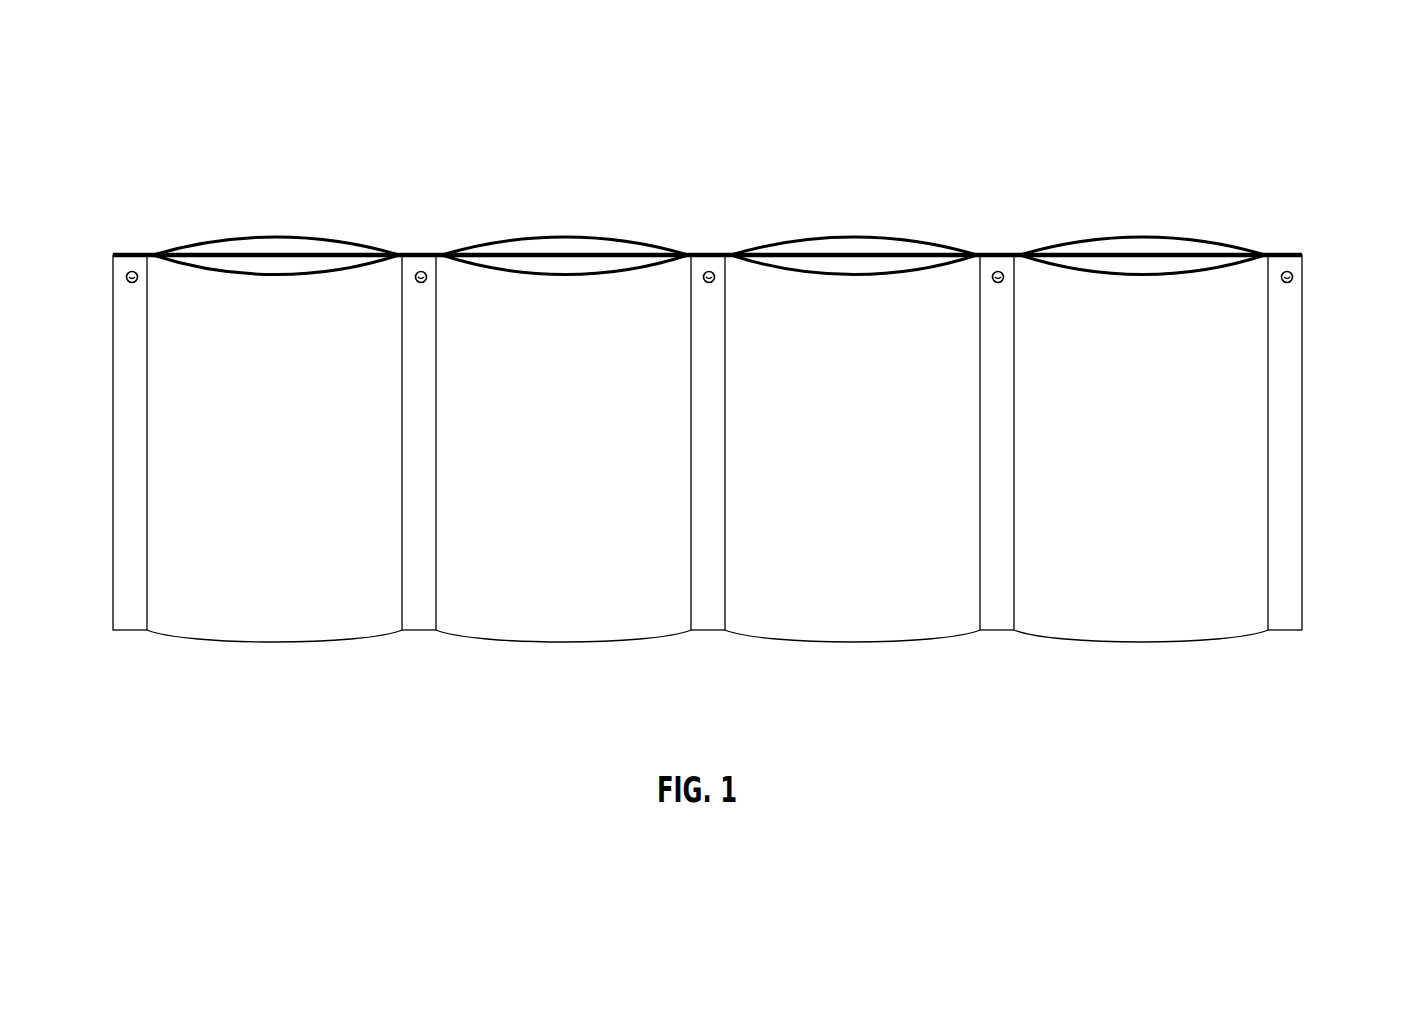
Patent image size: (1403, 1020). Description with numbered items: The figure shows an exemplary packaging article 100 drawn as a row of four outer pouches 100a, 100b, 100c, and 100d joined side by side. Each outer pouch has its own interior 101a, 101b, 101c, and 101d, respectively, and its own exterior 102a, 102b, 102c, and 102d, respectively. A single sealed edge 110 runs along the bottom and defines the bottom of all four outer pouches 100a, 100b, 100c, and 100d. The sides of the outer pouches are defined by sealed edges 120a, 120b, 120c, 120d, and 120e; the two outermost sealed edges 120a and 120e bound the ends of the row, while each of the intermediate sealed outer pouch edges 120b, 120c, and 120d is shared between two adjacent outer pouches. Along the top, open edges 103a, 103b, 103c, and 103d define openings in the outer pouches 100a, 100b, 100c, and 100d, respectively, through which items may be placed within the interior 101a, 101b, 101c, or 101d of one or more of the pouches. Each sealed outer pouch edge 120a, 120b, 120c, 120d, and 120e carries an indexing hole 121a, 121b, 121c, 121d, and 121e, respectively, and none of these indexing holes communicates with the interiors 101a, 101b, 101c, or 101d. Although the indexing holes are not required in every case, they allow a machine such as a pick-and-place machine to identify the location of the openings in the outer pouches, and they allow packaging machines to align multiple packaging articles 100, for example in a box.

The packaging article 100 is at (135, 102).
The outer pouch 100a is at (300, 668).
The outer pouch 100b is at (600, 658).
The outer pouch 100c is at (903, 650).
The outer pouch 100d is at (1202, 650).
The interior 101a is at (280, 273).
The interior 101b is at (592, 273).
The interior 101c is at (880, 273).
The interior 101d is at (1163, 273).
The exterior 102a is at (237, 620).
The exterior 102b is at (555, 612).
The exterior 102c is at (848, 617).
The exterior 102d is at (1148, 615).
The open edge 103a is at (234, 237).
The open edge 103b is at (547, 237).
The open edge 103c is at (832, 237).
The open edge 103d is at (1125, 237).
The sealed edge 110 is at (378, 640).
The sealed edge 120a is at (134, 253).
The sealed edge 120b is at (412, 253).
The sealed edge 120c is at (698, 253).
The sealed edge 120d is at (988, 253).
The sealed edge 120e is at (1277, 252).
The indexing hole 121a is at (135, 272).
The indexing hole 121b is at (424, 272).
The indexing hole 121c is at (712, 272).
The indexing hole 121d is at (1001, 272).
The indexing hole 121e is at (1291, 272).